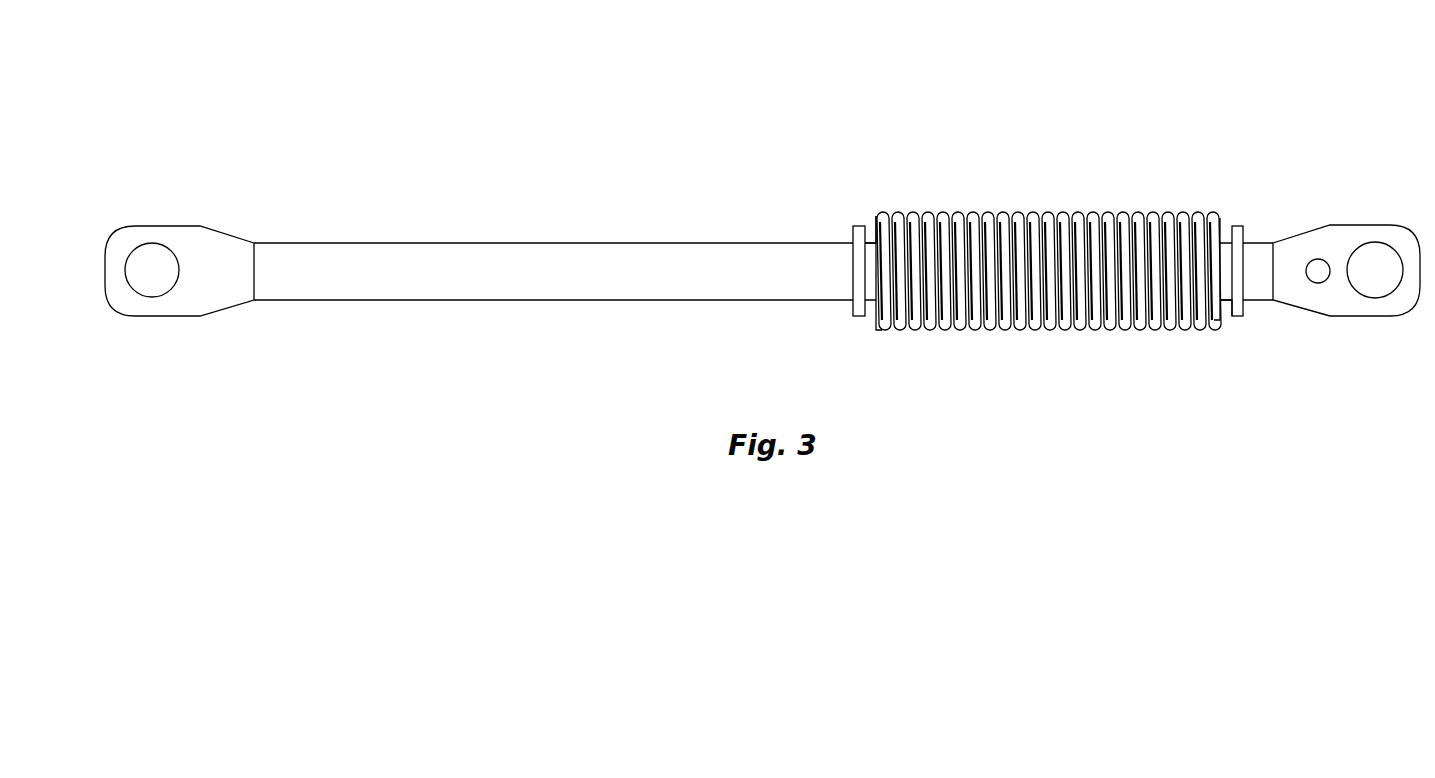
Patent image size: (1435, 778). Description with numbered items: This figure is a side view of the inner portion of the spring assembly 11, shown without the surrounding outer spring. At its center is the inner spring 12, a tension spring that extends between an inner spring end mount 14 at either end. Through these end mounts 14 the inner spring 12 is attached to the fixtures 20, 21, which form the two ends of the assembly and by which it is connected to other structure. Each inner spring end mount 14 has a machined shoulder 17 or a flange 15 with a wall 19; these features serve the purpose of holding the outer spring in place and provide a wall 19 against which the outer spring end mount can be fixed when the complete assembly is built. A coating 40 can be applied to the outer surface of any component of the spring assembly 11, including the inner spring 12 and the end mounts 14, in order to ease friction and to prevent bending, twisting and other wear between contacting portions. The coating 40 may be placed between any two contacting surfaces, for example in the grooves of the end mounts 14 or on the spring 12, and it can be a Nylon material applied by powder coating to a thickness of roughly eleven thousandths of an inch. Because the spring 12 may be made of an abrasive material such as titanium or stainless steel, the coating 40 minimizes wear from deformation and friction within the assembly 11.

The spring assembly 11 is at (1100, 446).
The inner spring 12 is at (1077, 225).
The inner spring end mount 14 is at (887, 292).
The flange 15 is at (868, 240).
The machined shoulder 17 is at (1239, 302).
The wall 19 is at (853, 236).
The fixture 20 is at (207, 293).
The fixture 21 is at (1352, 307).
The coating 40 is at (1057, 214).